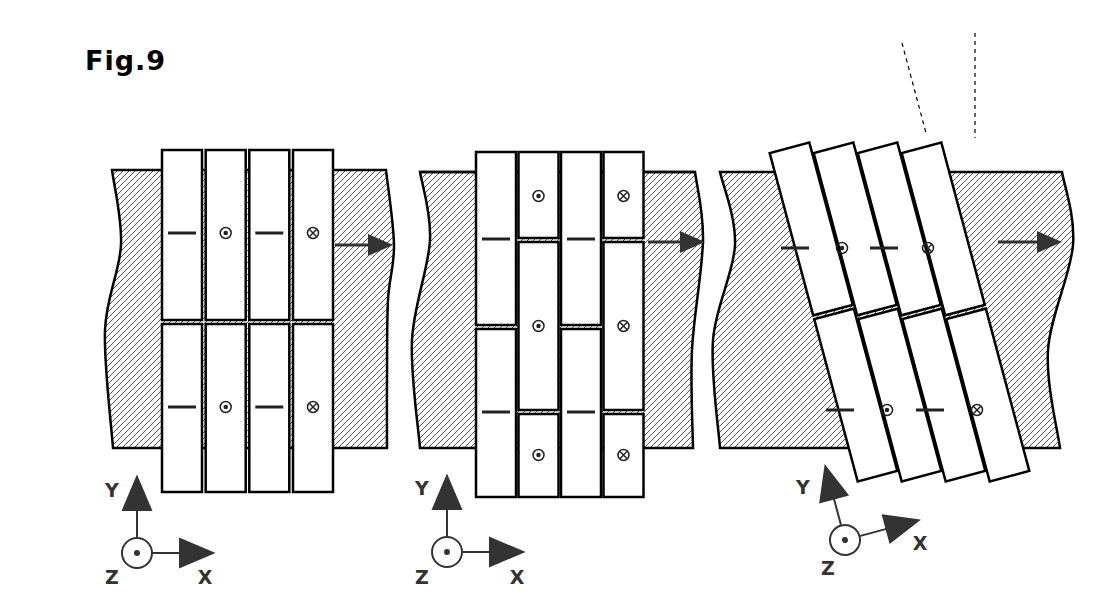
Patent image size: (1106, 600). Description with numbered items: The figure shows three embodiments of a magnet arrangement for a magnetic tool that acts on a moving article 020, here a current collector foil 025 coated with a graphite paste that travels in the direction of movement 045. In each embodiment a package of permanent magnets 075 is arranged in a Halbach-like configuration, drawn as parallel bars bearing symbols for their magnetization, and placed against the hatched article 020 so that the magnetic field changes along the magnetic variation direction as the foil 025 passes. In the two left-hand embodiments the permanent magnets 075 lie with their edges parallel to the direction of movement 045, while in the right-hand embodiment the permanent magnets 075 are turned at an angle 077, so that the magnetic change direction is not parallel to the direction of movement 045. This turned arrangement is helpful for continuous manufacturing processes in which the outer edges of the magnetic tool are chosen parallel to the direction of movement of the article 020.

The article 020 is at (589, 309).
The current collector foil 025 is at (446, 178).
The direction of movement 045 is at (698, 230).
The permanent magnet 075 is at (1035, 493).
The angle 077 is at (915, 82).